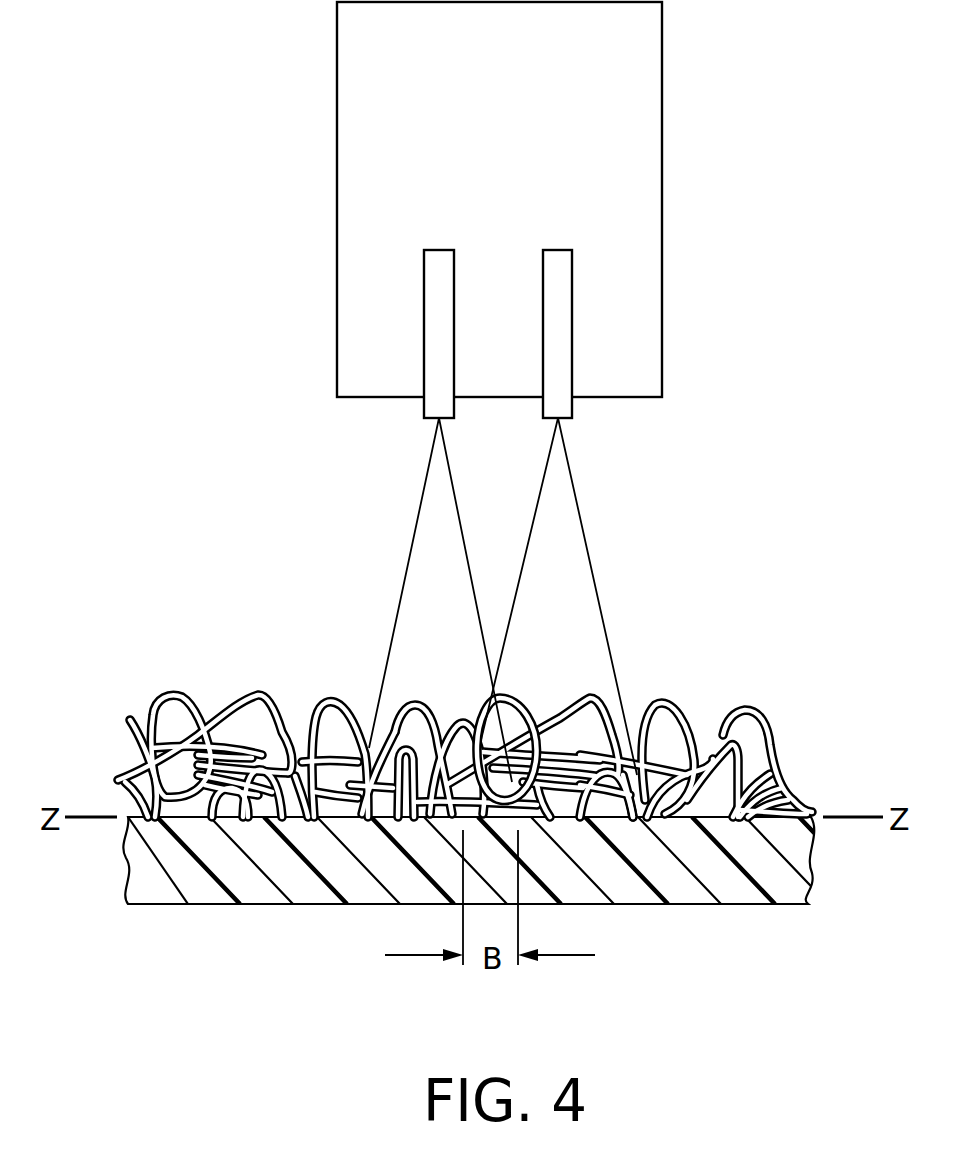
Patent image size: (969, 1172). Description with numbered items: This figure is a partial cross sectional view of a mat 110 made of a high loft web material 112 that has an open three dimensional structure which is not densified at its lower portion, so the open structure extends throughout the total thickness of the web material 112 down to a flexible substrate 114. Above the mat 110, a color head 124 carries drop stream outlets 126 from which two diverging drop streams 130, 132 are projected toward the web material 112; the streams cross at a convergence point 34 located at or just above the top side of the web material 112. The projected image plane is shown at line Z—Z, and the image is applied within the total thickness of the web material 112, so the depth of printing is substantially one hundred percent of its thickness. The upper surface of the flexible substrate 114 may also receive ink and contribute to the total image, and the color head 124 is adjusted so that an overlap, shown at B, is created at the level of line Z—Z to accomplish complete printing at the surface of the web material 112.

The mat 110 is at (153, 588).
The high loft web material 112 is at (133, 758).
The flexible substrate 114 is at (207, 890).
The color head 124 is at (663, 73).
The drop stream nozzles 126 is at (542, 283).
The drop stream 130 is at (422, 508).
The drop stream 132 is at (577, 498).
The convergence point 34 is at (493, 695).